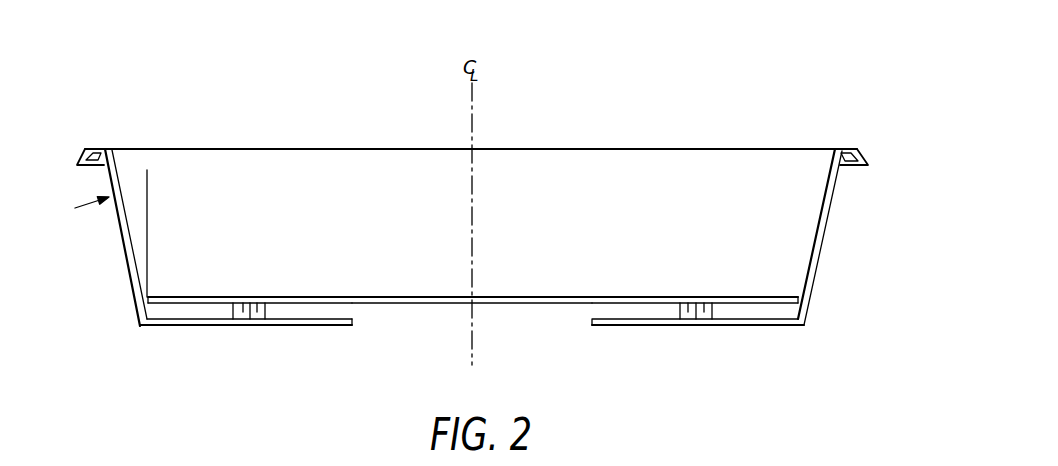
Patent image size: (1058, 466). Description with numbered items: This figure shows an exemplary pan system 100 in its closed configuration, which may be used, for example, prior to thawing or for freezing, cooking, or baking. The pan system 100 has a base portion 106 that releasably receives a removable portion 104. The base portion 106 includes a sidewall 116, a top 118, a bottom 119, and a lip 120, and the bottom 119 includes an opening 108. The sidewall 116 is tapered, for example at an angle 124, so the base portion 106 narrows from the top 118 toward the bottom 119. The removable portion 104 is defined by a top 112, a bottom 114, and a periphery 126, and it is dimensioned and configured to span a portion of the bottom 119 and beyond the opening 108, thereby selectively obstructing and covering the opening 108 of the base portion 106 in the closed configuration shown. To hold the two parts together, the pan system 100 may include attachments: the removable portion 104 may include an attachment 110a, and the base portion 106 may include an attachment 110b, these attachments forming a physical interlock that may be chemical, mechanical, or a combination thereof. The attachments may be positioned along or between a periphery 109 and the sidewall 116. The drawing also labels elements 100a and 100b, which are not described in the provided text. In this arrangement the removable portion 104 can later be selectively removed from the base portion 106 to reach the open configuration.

The pan system 100 is at (719, 68).
The left standoff first portion 100a is at (242, 320).
The left standoff second portion 100b is at (256, 320).
The removable portion 104 is at (318, 281).
The base portion 106 is at (360, 108).
The opening 108 is at (437, 334).
The periphery 109 is at (353, 322).
The attachment 110a is at (704, 320).
The attachment 110b is at (688, 320).
The top 112 is at (368, 297).
The bottom 114 is at (510, 304).
The sidewall 116 is at (808, 275).
The top 118 is at (847, 148).
The bottom 119 is at (640, 319).
The lip 120 is at (79, 162).
The angle 124 is at (152, 193).
The periphery 126 is at (803, 299).